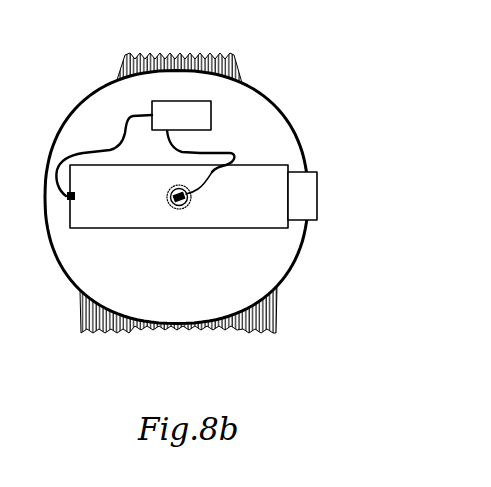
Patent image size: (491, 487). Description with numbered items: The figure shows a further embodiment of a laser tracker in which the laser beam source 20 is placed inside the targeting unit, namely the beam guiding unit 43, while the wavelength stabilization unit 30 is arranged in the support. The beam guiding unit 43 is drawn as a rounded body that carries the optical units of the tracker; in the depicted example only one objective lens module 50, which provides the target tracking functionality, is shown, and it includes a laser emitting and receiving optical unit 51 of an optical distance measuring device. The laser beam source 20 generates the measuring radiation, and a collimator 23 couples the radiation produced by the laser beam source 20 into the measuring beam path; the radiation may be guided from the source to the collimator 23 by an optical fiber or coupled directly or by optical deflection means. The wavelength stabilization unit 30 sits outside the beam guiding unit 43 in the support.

The laser beam source 20 is at (168, 118).
The collimator 23 is at (50, 175).
The wavelength stabilization unit 30 is at (180, 285).
The beam guiding unit 43 is at (255, 265).
The objective lens module 50 is at (235, 192).
The laser emitting and receiving optical unit 51 is at (305, 192).